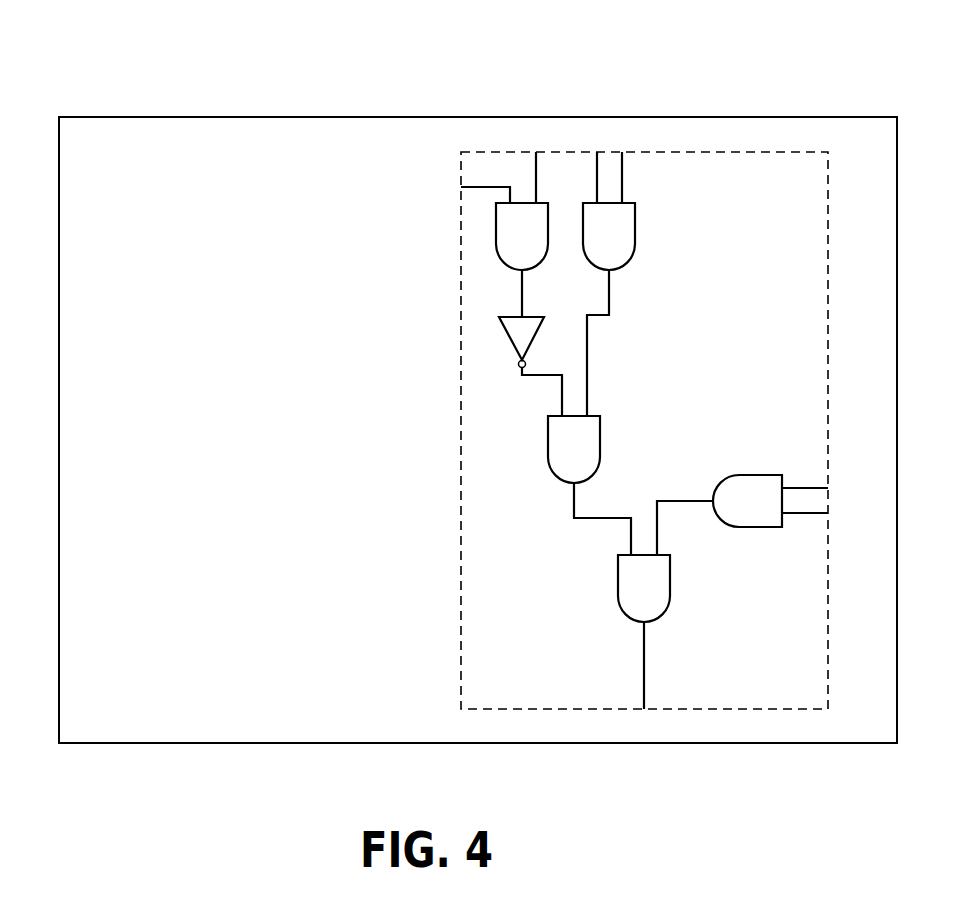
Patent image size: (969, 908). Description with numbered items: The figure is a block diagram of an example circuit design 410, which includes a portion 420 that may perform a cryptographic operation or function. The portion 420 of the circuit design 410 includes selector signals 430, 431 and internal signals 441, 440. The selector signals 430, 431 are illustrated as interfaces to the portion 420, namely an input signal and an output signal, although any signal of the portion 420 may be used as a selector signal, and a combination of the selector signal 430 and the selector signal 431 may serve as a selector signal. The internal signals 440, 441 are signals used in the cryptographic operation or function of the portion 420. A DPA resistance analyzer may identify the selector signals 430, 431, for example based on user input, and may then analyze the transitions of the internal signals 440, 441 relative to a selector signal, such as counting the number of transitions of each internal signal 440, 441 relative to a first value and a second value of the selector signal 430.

The circuit design 410 is at (260, 117).
The portion 420 is at (461, 668).
The selector signal 430 is at (484, 187).
The internal signal 441 is at (588, 358).
The internal signal 440 is at (667, 498).
The selector signal 431 is at (644, 655).